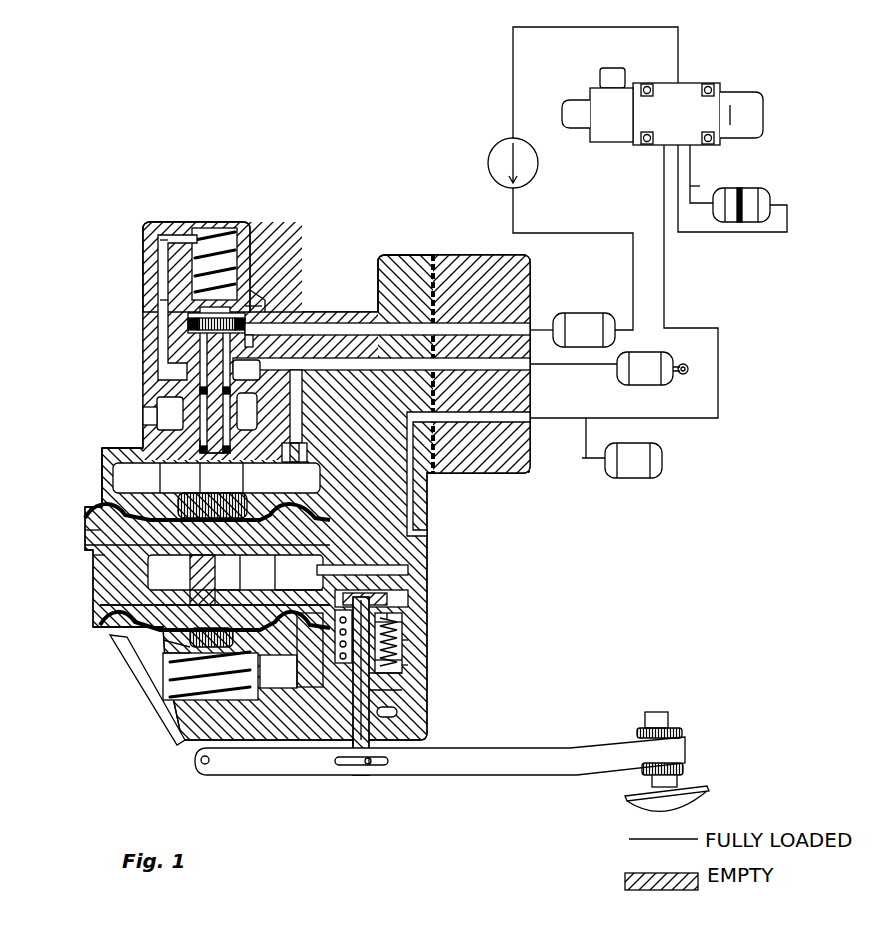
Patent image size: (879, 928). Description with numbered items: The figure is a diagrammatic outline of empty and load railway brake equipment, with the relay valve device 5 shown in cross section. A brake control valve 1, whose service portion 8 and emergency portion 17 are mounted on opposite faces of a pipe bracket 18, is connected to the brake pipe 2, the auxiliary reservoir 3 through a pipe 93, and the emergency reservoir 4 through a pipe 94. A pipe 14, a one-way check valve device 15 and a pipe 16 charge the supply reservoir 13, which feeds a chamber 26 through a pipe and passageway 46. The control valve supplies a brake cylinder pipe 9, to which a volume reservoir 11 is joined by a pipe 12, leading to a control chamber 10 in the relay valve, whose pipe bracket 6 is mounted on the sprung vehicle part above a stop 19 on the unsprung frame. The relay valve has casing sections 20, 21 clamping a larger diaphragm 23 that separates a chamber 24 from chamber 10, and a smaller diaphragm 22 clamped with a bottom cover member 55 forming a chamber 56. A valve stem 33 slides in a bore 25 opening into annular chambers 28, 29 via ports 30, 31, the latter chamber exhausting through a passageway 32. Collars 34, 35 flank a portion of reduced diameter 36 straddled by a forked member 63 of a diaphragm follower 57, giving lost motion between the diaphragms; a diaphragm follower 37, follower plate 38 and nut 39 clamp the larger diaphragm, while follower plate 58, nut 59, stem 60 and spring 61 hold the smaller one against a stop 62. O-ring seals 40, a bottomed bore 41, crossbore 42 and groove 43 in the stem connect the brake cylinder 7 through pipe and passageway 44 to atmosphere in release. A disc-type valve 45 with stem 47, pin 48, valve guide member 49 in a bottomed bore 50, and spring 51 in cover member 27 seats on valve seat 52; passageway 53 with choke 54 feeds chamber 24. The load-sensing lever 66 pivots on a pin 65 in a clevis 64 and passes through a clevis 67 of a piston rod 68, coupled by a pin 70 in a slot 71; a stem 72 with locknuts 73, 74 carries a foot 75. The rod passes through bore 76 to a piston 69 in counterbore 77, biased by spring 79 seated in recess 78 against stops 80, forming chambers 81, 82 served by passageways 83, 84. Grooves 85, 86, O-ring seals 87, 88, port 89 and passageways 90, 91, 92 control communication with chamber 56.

The brake control valve 1 is at (660, 78).
The brake pipe 2 is at (700, 168).
The auxiliary reservoir 3 is at (712, 210).
The emergency reservoir 4 is at (760, 196).
The relay valve device 5 is at (94, 454).
The pipe bracket 6 is at (462, 250).
The brake cylinder 7 is at (625, 381).
The service portion 8 is at (600, 143).
The brake cylinder pipe 9 is at (664, 320).
The control chamber 10 is at (100, 579).
The volume reservoir 11 is at (645, 447).
The pipe 12 is at (586, 460).
The supply reservoir 13 is at (578, 313).
The pipe 14 is at (515, 40).
The check valve device 15 is at (494, 143).
The pipe 16 is at (566, 233).
The emergency portion 17 is at (735, 93).
The pipe bracket 18 is at (655, 147).
The stop 19 is at (625, 881).
The casing section 20 is at (158, 442).
The casing section 21 is at (95, 540).
The diaphragm 22 is at (110, 628).
The diaphragm 23 is at (95, 512).
The chamber 24 is at (110, 478).
The bore 25 is at (244, 342).
The chamber 26 is at (262, 306).
The cover member 27 is at (248, 272).
The annular chamber 28 is at (160, 370).
The annular chamber 29 is at (160, 405).
The ports 30 is at (248, 376).
The ports 31 is at (198, 440).
The passageway 32 is at (148, 420).
The valve stem 33 is at (220, 494).
The collar 34 is at (100, 563).
The collar 35 is at (190, 586).
The portion of reduced diameter 36 is at (235, 572).
The diaphragm follower 37 is at (256, 572).
The diaphragm follower plate 38 is at (150, 506).
The nut 39 is at (250, 500).
The O-ring seal 40 is at (203, 390).
The bottomed bore 41 is at (205, 352).
The crossbore 42 is at (248, 411).
The annular groove 43 is at (180, 478).
The pipe and passageway 44 is at (535, 366).
The disc-type valve 45 is at (190, 320).
The pipe and passageway 46 is at (536, 322).
The stem 47 is at (172, 302).
The pin 48 is at (258, 296).
The valve guide member 49 is at (170, 282).
The bottomed bore 50 is at (238, 233).
The spring 51 is at (238, 258).
The valve seat 52 is at (192, 331).
The passageway 53 is at (296, 398).
The choke 54 is at (300, 452).
The bottom cover member 55 is at (110, 618).
The chamber 56 is at (170, 668).
The diaphragm follower 57 is at (110, 600).
The diaphragm follower plate 58 is at (170, 660).
The nut 59 is at (233, 641).
The stem 60 is at (175, 680).
The spring 61 is at (175, 695).
The stop 62 is at (299, 583).
The forked member 63 is at (244, 583).
The clevis 64 is at (185, 742).
The pin 65 is at (201, 761).
The load-sensing lever 66 is at (275, 776).
The clevis 67 is at (350, 767).
The piston rod 68 is at (370, 722).
The piston 69 is at (392, 602).
The pin 70 is at (370, 766).
The slot 71 is at (386, 766).
The stem 72 is at (660, 713).
The locknut 73 is at (680, 731).
The locknut 74 is at (684, 768).
The foot 75 is at (700, 796).
The bore 76 is at (352, 722).
The counterbore 77 is at (400, 640).
The recess 78 is at (400, 658).
The spring 79 is at (402, 624).
The stops 80 is at (392, 596).
The chamber 81 is at (291, 572).
The chamber 82 is at (332, 660).
The passageway 83 is at (350, 568).
The passageway 84 is at (340, 640).
The annular groove 85 is at (385, 674).
The annular groove 86 is at (400, 690).
The O-ring seal 87 is at (352, 705).
The O-ring seal 88 is at (405, 666).
The port 89 is at (405, 650).
The passageway 90 is at (408, 634).
The passageway 91 is at (297, 682).
The atmospheric passageway 92 is at (398, 712).
The pipe 93 is at (700, 186).
The pipe 94 is at (742, 232).